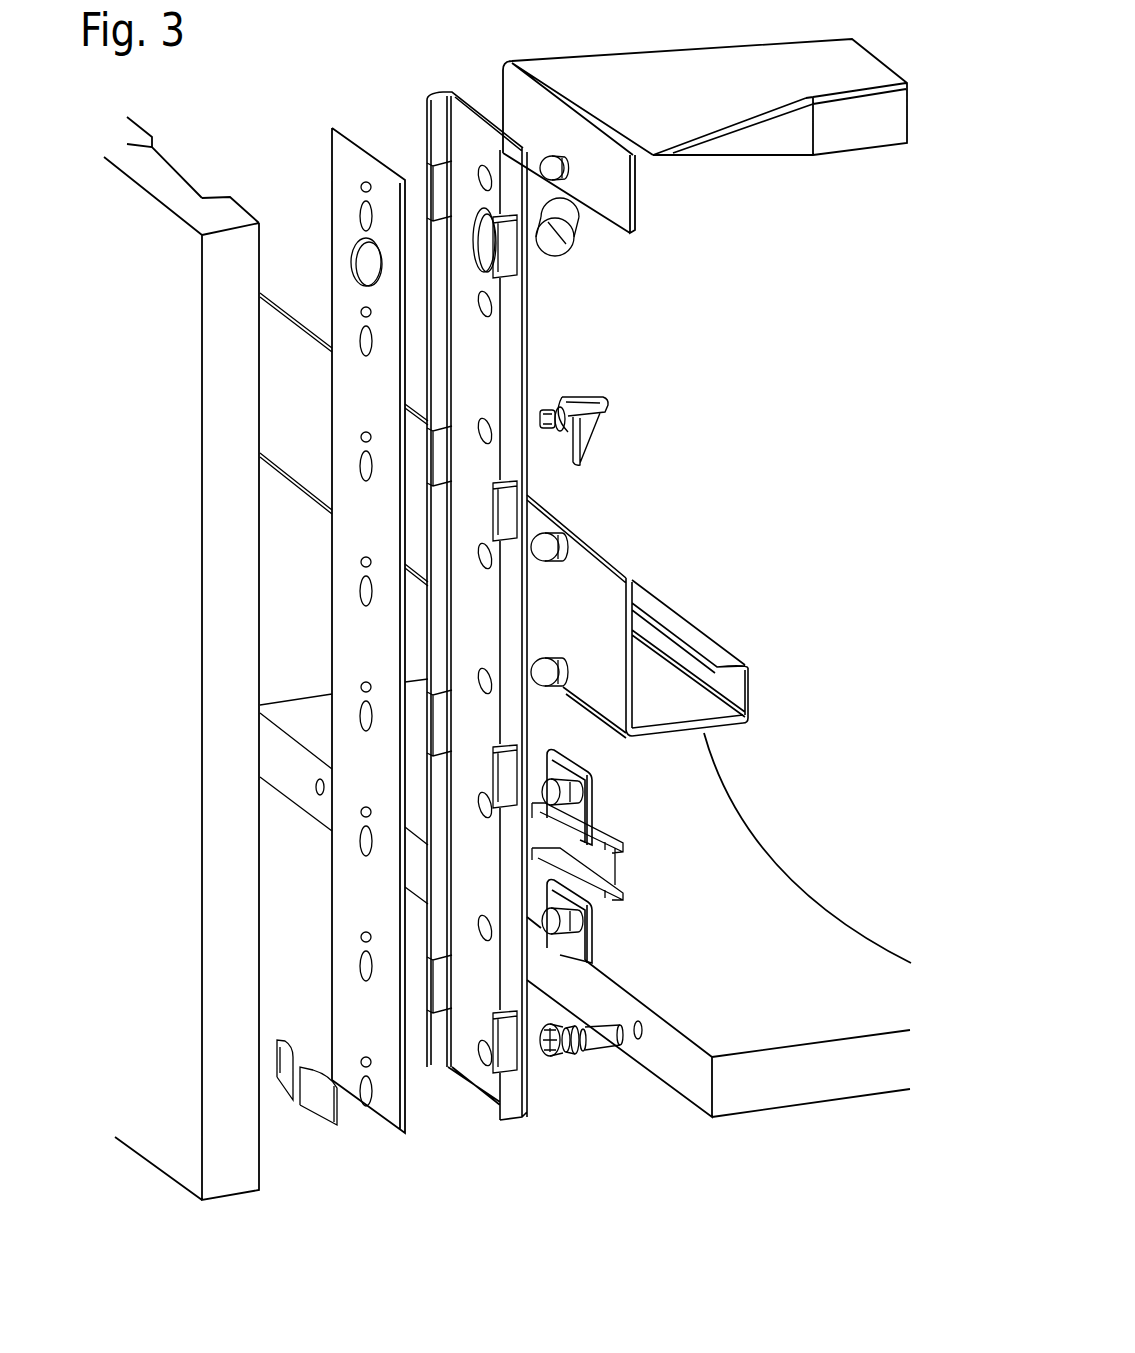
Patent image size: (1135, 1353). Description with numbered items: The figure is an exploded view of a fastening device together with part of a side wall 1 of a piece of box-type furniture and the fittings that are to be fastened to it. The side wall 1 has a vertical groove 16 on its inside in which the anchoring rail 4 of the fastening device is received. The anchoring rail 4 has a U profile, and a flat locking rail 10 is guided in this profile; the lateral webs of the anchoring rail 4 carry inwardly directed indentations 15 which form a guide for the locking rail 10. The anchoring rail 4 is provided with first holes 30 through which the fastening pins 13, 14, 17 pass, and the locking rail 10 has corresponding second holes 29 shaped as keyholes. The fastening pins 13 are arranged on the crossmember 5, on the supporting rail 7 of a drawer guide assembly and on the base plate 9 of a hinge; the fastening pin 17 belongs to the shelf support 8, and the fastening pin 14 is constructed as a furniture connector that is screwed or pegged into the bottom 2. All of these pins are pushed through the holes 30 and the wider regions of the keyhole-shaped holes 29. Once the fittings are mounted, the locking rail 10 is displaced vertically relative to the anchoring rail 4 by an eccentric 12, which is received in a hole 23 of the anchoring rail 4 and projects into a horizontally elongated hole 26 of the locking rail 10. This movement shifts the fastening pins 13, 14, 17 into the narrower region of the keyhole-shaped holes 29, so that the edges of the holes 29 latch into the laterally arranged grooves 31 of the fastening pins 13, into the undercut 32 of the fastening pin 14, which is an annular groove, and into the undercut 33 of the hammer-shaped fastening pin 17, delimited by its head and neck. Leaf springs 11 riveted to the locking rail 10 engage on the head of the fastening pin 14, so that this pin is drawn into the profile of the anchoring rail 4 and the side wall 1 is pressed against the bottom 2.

The side wall 1 is at (163, 283).
The bottom 2 is at (768, 1090).
The anchoring rail 4 is at (554, 693).
The crossmember 5 is at (845, 125).
The supporting rail 7 is at (752, 688).
The shelf support 8 is at (619, 392).
The base plate 9 is at (617, 863).
The locking rail 10 is at (330, 673).
The leaf spring 11 is at (312, 1090).
The eccentric 12 is at (573, 207).
The fastening pin 13 is at (682, 485).
The fastening pin 14 is at (553, 1080).
The indentation 15 is at (502, 1040).
The vertical groove 16 is at (168, 168).
The fastening pin 17 is at (547, 412).
The hole 23 is at (487, 252).
The horizontally elongated hole 26 is at (366, 263).
The second hole 29 is at (366, 187).
The first hole 30 is at (490, 302).
The groove 31 is at (563, 157).
The undercut 32 is at (580, 1055).
The undercut 33 is at (560, 410).